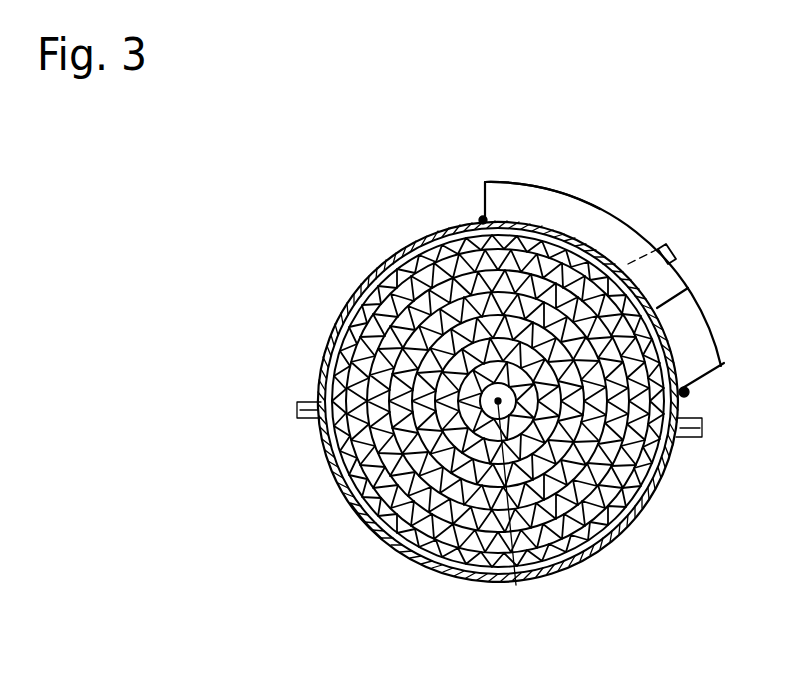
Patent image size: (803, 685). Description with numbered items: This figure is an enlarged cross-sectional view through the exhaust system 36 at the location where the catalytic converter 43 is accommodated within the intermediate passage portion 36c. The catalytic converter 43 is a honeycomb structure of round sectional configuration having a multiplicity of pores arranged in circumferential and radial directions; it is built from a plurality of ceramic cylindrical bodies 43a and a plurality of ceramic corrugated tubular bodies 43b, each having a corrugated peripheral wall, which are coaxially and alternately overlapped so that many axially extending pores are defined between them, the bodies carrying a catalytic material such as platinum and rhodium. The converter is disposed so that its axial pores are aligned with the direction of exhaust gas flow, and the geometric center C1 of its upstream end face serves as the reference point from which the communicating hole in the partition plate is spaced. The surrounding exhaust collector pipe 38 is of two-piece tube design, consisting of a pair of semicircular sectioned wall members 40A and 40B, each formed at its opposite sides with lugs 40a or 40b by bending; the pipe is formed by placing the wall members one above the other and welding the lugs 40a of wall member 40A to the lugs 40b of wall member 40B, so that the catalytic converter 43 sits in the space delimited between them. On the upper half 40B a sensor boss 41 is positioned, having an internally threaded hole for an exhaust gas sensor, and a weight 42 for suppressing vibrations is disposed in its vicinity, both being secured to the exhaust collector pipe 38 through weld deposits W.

The exhaust system 36 is at (386, 238).
The intermediate passage portion 36c is at (358, 512).
The exhaust collector pipe 38 is at (206, 325).
The semicircular sectioned wall member 40A is at (322, 463).
The semicircular sectioned wall member 40B is at (326, 370).
The lug 40a is at (688, 437).
The lug 40b is at (688, 415).
The sensor boss 41 is at (692, 342).
The weight 42 is at (600, 220).
The catalytic converter 43 is at (440, 300).
The cylindrical body 43a is at (600, 547).
The corrugated tubular body 43b is at (637, 507).
The geometric center C1 is at (516, 585).
The weld deposit W is at (533, 222).